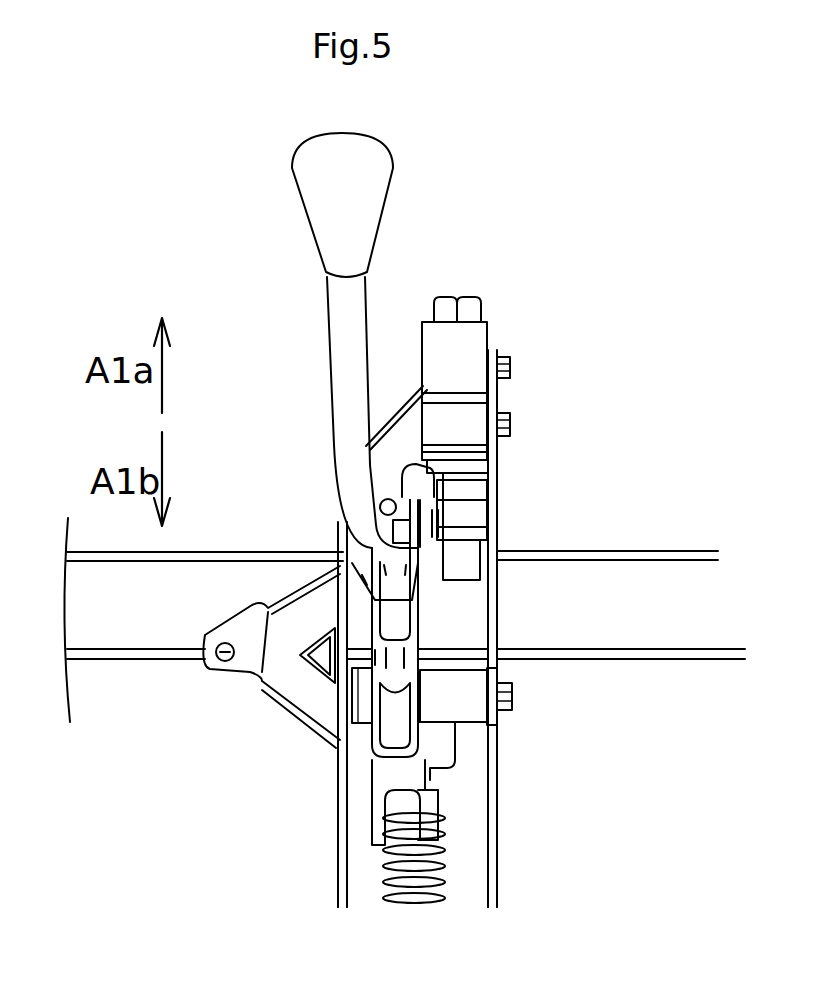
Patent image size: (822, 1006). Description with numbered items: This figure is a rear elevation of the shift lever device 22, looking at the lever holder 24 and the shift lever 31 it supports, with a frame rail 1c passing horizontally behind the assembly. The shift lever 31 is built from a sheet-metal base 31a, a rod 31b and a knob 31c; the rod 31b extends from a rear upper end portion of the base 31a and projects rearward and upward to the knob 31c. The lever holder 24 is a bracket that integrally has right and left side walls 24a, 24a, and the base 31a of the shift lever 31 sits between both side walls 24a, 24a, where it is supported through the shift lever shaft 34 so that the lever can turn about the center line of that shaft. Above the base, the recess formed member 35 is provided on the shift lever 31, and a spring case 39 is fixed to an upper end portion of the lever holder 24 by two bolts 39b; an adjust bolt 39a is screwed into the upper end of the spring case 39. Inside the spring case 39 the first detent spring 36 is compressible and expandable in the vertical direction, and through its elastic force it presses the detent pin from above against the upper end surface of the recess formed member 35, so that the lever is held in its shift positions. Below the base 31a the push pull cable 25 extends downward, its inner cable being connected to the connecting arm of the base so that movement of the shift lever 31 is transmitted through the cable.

The rail 1c is at (643, 551).
The shift lever device 22 is at (500, 272).
The lever holder 24 is at (550, 795).
The side walls 24a is at (340, 865).
The push pull cable 25 is at (421, 928).
The shift lever 31 is at (294, 455).
The base 31a is at (377, 703).
The rod 31b is at (345, 413).
The knob 31c is at (336, 196).
The shift lever shaft 34 is at (460, 697).
The recess formed member 35 is at (458, 517).
The first detent spring 36 is at (470, 488).
The spring case 39 is at (518, 348).
The adjust bolt 39a is at (460, 315).
The bolts 39b is at (511, 367).